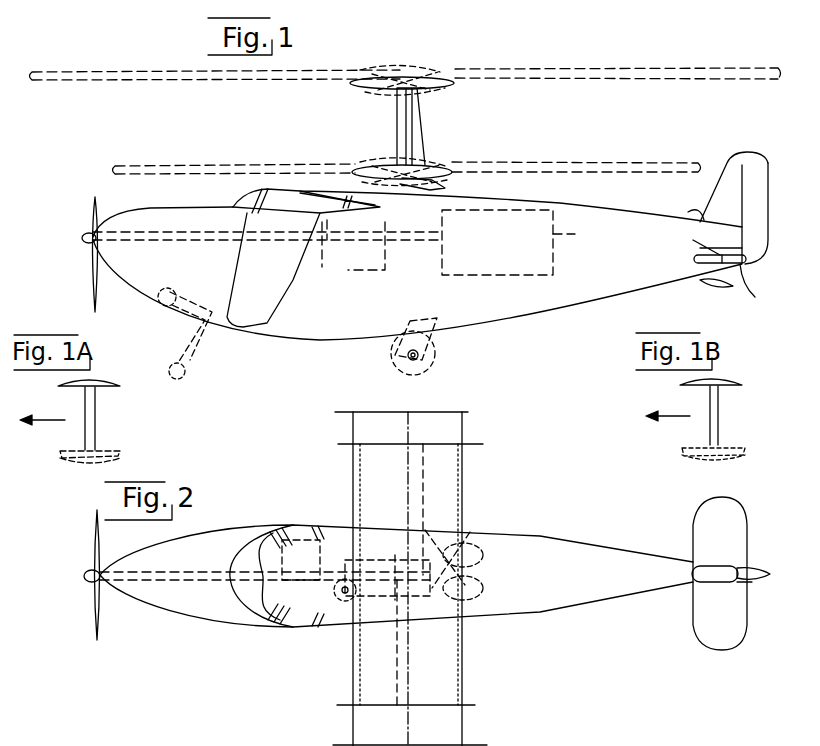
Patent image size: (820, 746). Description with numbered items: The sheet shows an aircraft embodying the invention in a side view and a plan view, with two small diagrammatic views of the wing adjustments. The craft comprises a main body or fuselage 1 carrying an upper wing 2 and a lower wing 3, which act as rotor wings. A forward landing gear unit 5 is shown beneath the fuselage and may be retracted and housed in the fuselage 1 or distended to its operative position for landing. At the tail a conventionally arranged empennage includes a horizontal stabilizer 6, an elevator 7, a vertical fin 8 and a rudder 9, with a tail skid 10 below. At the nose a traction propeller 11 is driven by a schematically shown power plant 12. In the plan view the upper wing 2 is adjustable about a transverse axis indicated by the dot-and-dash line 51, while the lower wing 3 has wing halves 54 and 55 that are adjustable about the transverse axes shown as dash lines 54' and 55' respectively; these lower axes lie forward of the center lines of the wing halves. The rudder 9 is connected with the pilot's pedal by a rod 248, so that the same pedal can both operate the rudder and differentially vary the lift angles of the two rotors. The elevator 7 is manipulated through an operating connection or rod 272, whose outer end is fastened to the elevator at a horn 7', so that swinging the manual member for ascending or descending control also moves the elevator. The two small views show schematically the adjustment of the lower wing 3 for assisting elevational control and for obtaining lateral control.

In FIG. 1, the fuselage 1 is at (578, 307).
In FIG. 1, the upper wing 2 is at (586, 86).
In FIG. 1A, the upper wing 2 is at (110, 393).
In FIG. 1B, the upper wing 2 is at (735, 390).
In FIG. 1, the lower wing 3 is at (452, 163).
In FIG. 1A, the lower wing 3 is at (112, 450).
In FIG. 1B, the lower wing 3 is at (737, 447).
In FIG. 1, the forward landing gear unit 5 is at (190, 362).
In FIG. 1, the horizontal stabilizer 6 is at (693, 240).
In FIG. 1, the elevator 7 is at (753, 286).
In FIG. 1, the horn 7' is at (743, 244).
In FIG. 1, the vertical fin 8 is at (727, 170).
In FIG. 1, the rudder 9 is at (762, 170).
In FIG. 2, the rudder 9 is at (752, 570).
In FIG. 1, the tail skid 10 is at (723, 278).
In FIG. 1, the traction propeller 11 is at (95, 270).
In FIG. 1, the power plant 12 is at (520, 242).
In FIG. 1, the transverse axis 51 is at (405, 74).
In FIG. 2, the transverse axis 51 is at (410, 420).
In FIG. 2, the wing half 54 is at (321, 574).
In FIG. 1, the transverse axis 54' is at (454, 184).
In FIG. 2, the transverse axis 54' is at (468, 509).
In FIG. 2, the wing half 55 is at (483, 574).
In FIG. 2, the transverse axis 55' is at (354, 642).
In FIG. 2, the rod 248 is at (730, 588).
In FIG. 1, the operating connection 272 is at (700, 212).